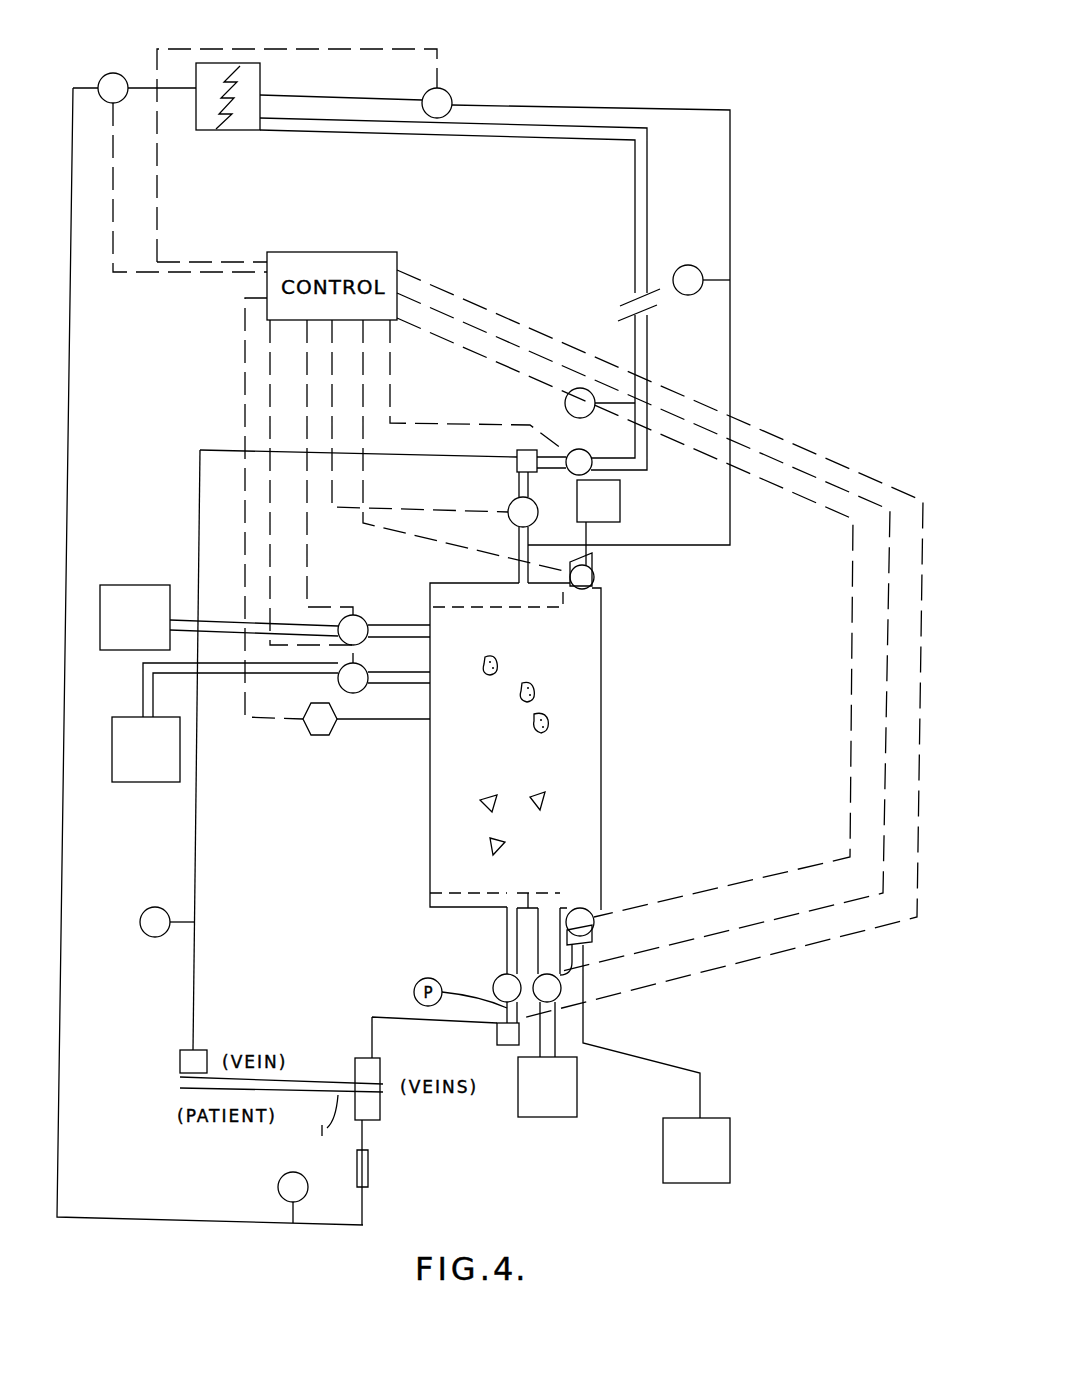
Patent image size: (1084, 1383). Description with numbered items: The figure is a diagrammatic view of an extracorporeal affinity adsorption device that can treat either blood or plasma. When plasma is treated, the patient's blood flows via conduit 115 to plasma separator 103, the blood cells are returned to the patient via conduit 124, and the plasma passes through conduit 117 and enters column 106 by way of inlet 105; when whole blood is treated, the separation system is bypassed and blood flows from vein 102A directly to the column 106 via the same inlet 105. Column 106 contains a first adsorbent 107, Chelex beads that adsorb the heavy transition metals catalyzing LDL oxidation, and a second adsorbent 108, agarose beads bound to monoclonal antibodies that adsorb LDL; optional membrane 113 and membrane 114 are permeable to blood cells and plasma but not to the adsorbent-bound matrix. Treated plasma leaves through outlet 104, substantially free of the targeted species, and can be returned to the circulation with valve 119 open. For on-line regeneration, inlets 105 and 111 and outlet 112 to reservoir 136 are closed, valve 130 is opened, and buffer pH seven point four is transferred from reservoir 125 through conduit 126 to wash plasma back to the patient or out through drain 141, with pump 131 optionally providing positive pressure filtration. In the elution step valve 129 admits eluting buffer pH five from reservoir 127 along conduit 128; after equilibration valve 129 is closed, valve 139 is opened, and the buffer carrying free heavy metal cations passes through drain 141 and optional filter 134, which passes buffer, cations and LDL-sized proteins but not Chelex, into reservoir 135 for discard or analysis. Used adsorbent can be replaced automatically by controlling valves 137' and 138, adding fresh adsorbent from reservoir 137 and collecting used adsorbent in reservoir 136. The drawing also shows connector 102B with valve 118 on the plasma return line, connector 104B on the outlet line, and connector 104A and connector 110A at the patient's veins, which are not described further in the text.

The plasma separator 103 is at (256, 69).
The conduit 124 is at (69, 434).
The conduit 117 is at (730, 258).
The conduit 115 is at (635, 244).
The connector 102B is at (516, 450).
The inlet 105 is at (519, 574).
The valve 118 is at (511, 501).
The reservoir 137 is at (625, 501).
The valve 137' is at (633, 568).
The inlet 111 is at (596, 573).
The column 106 is at (451, 786).
The membrane 113 is at (524, 610).
The first adsorbent 107 is at (551, 722).
The second adsorbent 108 is at (546, 800).
The membrane 114 is at (430, 890).
The outlet 104 is at (507, 940).
The valve 119 is at (496, 980).
The connector 104B is at (497, 1033).
The filter 134 is at (538, 893).
The drain 141 is at (578, 977).
The valve 139 is at (576, 998).
The reservoir 135 is at (530, 1118).
The outlet 112 is at (600, 910).
The valve 138 is at (594, 922).
The reservoir 136 is at (683, 1183).
The reservoir 125 is at (136, 585).
The conduit 126 is at (212, 620).
The valve 130 is at (346, 617).
The valve 129 is at (366, 668).
The pH 5 supply tube 128 is at (286, 690).
The reservoir 127 is at (150, 782).
The pump 131 is at (322, 736).
The vein 102A is at (157, 1084).
The vein connector 110A is at (380, 1110).
The return line connector 104A is at (380, 1066).